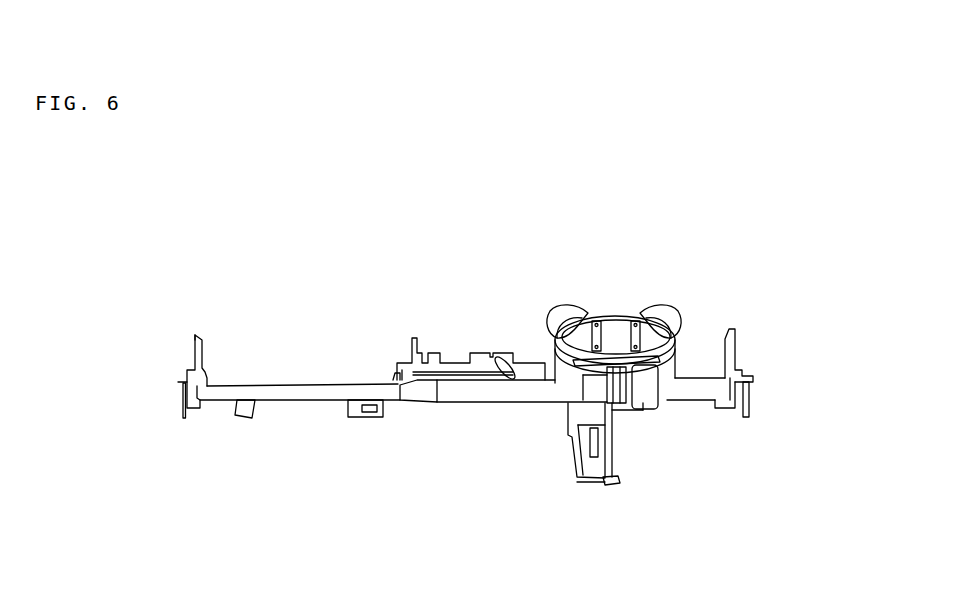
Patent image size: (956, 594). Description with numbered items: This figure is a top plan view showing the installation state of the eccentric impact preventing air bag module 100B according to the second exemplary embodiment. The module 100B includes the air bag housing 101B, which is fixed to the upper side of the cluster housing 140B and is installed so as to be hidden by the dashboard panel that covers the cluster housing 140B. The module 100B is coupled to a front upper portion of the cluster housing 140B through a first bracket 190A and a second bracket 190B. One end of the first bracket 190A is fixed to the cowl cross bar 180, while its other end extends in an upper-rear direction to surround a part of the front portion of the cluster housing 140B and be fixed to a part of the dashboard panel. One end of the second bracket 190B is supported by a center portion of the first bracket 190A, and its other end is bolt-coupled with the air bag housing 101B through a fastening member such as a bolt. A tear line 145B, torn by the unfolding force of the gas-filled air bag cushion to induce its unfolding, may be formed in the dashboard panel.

The eccentric impact preventing air bag module 100B is at (688, 353).
The air bag housing 101B is at (648, 394).
The cluster housing 140B is at (615, 347).
The tear line 145B is at (663, 409).
The cowl cross bar 180 is at (462, 402).
The first bracket 190A is at (597, 352).
The second bracket 190B is at (617, 410).